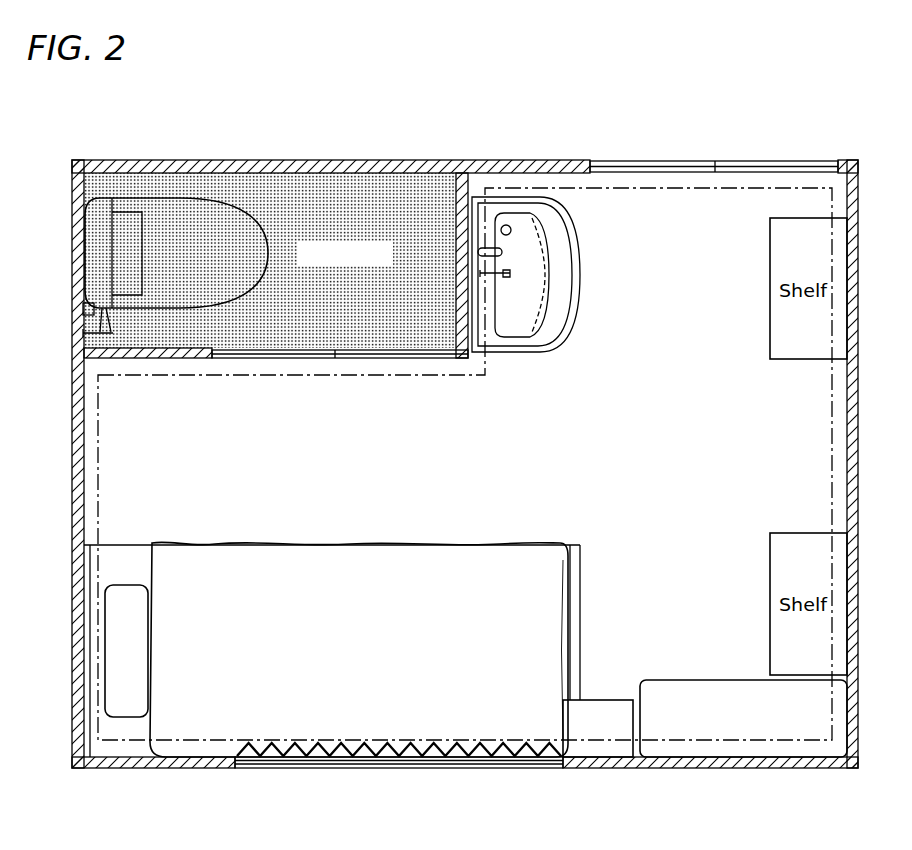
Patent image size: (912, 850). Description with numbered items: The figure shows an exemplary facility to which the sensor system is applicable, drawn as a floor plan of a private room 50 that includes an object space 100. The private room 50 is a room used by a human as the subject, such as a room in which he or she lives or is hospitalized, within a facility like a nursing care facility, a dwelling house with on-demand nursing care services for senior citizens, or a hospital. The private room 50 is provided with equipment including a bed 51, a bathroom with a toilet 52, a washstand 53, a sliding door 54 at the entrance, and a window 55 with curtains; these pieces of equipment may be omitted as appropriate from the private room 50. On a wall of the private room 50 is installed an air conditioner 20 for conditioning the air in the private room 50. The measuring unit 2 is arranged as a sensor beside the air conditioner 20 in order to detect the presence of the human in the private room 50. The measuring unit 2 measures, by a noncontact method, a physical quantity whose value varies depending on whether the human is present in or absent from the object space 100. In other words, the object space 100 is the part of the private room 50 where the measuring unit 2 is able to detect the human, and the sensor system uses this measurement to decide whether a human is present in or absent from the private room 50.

The private room 50 is at (137, 160).
The bathroom with a toilet 52 is at (208, 212).
The washstand 53 is at (565, 272).
The sliding door 54 is at (800, 160).
The bed 51 is at (399, 558).
The measuring unit 2 is at (606, 705).
The air conditioner 20 is at (722, 690).
The window 55 is at (520, 762).
The object space 100 is at (125, 745).